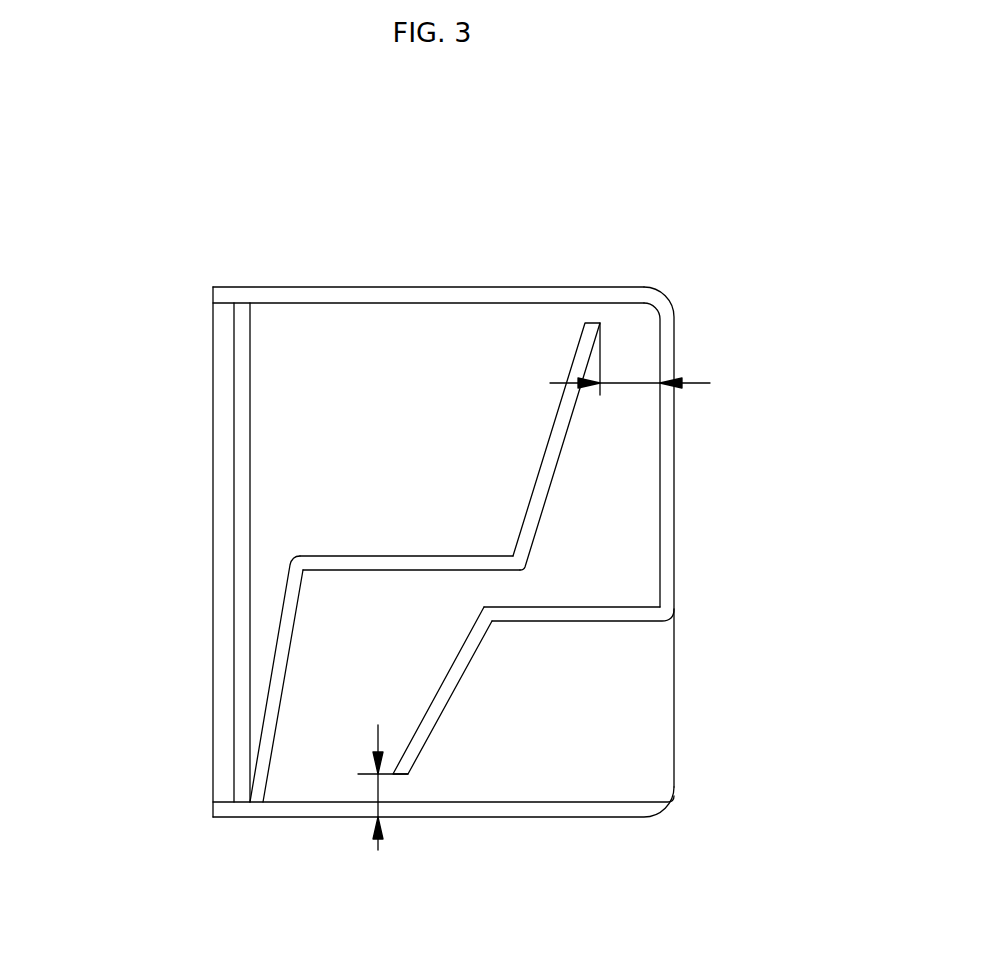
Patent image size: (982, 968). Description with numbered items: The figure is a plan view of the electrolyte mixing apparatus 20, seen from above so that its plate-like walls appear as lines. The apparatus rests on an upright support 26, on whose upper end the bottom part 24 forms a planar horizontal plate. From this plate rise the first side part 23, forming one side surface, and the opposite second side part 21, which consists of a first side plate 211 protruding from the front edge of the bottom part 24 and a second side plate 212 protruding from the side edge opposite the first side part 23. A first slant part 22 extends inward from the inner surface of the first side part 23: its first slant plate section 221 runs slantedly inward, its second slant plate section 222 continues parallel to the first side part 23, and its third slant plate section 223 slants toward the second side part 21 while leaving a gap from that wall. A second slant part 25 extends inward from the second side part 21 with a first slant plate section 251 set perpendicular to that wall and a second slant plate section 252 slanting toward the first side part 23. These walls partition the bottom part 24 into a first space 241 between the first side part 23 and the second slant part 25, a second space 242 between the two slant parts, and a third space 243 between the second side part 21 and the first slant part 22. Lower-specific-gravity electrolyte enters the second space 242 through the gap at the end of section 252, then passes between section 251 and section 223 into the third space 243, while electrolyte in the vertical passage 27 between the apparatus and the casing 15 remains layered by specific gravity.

The casing 15 is at (213, 712).
The electrolyte mixing apparatus 20 is at (485, 172).
The second side part 21 is at (454, 541).
The first side plate 211 is at (674, 443).
The second side plate 212 is at (563, 287).
The first slant part 22 is at (244, 754).
The first slant plate section 221 is at (275, 743).
The second slant plate section 222 is at (370, 570).
The third slant plate section 223 is at (552, 478).
The first side part 23 is at (598, 817).
The bottom part 24 is at (662, 718).
The first space 241 is at (612, 748).
The second space 242 is at (333, 745).
The third space 243 is at (338, 374).
The second slant part 25 is at (552, 667).
The first slant plate section 251 is at (613, 621).
The second slant plate section 252 is at (460, 688).
The support 26 is at (250, 630).
The vertical passage 27 is at (237, 480).